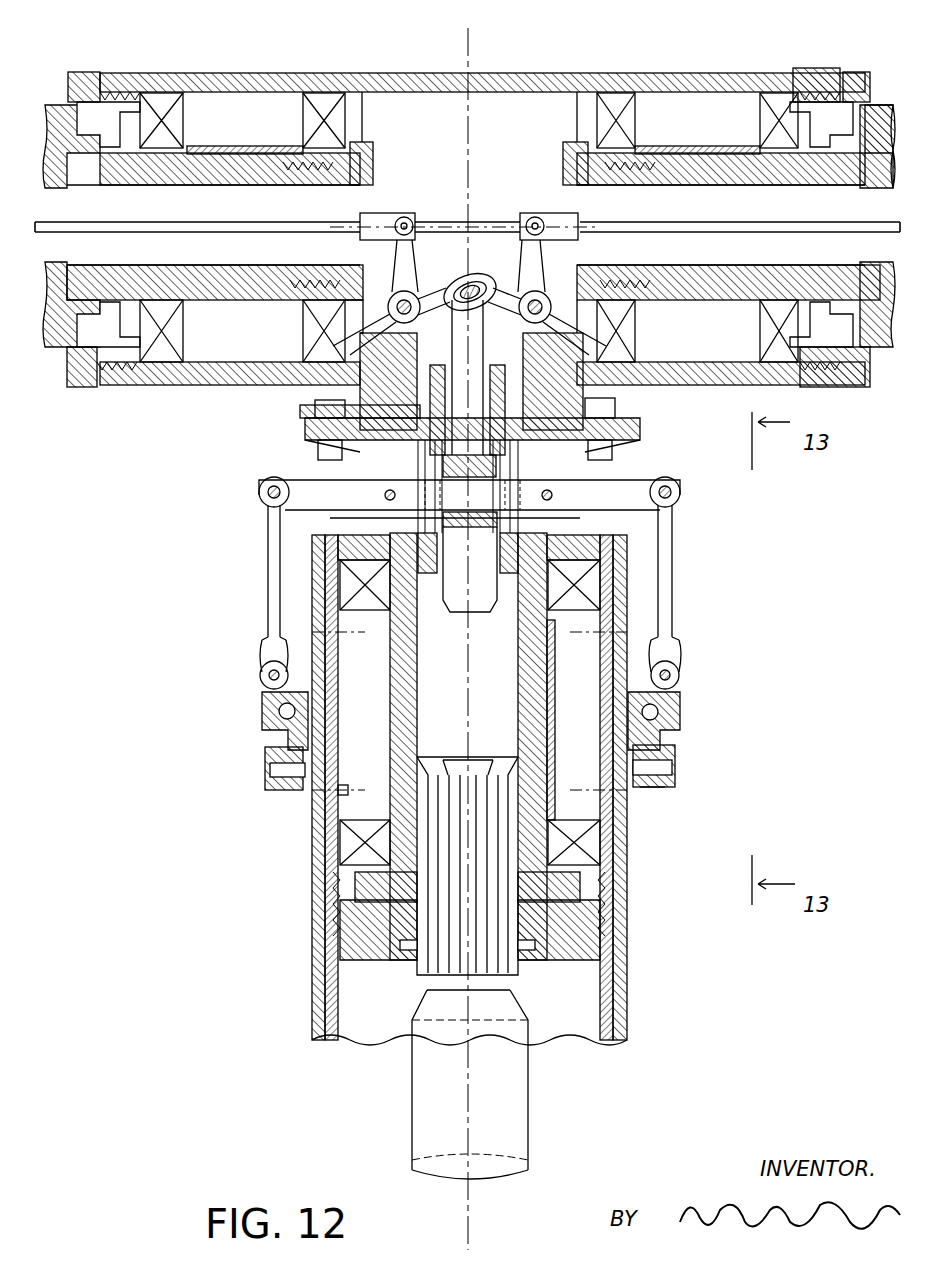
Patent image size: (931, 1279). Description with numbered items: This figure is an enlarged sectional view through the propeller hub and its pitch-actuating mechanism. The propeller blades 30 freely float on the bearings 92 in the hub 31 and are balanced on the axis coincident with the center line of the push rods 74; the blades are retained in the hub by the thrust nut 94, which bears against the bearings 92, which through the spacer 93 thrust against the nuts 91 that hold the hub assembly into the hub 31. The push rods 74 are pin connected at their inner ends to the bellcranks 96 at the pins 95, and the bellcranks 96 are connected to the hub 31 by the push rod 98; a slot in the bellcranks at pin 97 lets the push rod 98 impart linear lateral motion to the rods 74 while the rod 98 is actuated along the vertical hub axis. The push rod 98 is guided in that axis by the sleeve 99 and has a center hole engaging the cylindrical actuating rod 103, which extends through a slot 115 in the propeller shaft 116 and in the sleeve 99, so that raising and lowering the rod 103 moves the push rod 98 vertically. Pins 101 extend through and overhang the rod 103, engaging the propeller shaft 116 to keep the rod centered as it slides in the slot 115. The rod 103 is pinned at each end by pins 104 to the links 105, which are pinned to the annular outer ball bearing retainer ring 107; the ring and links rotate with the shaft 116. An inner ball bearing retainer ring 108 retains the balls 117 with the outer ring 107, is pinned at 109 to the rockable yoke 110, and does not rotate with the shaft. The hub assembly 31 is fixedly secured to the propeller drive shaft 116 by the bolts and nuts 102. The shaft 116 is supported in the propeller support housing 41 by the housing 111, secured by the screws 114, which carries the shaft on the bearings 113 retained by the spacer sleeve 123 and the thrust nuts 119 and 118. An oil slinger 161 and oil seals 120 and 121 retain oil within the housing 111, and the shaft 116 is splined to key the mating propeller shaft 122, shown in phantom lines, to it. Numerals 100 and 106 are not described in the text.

The propeller blades 30 is at (45, 105).
The propeller hub 31 is at (545, 88).
The propeller shaft housing 41 is at (315, 955).
The push rods 74 is at (220, 235).
The nuts 91 is at (90, 90).
The bearings 92 is at (180, 112).
The spacer 93 is at (225, 148).
The thrust nut 94 is at (373, 162).
The pins 95 is at (404, 217).
The bellcranks 96 is at (413, 262).
The pin 97 is at (472, 284).
The push rod 98 is at (483, 328).
The sleeve 99 is at (440, 372).
The bell crank pivot 100 is at (333, 346).
The pins 101 is at (552, 490).
The bolts and nuts 102 is at (615, 408).
The actuating rod 103 is at (325, 492).
The pins 104 is at (268, 490).
The links 105 is at (268, 540).
The lower pin 106 is at (672, 668).
The outer ball bearing retainer ring 107 is at (680, 697).
The inner ball bearing retainer ring 108 is at (665, 730).
The pin 109 is at (268, 770).
The rockable yoke 110 is at (652, 790).
The housing 111 is at (360, 582).
The bearings 113 is at (400, 608).
The screws 114 is at (320, 790).
The slot 115 is at (430, 458).
The propeller shaft 116 is at (430, 522).
The balls 117 is at (282, 714).
The thrust nut 118 is at (603, 935).
The thrust nut 119 is at (560, 955).
The oil seal 120 is at (540, 985).
The oil seal 121 is at (562, 545).
The mating propeller shaft 122 is at (512, 1102).
The spacer sleeve 123 is at (546, 682).
The oil slinger 161 is at (345, 890).